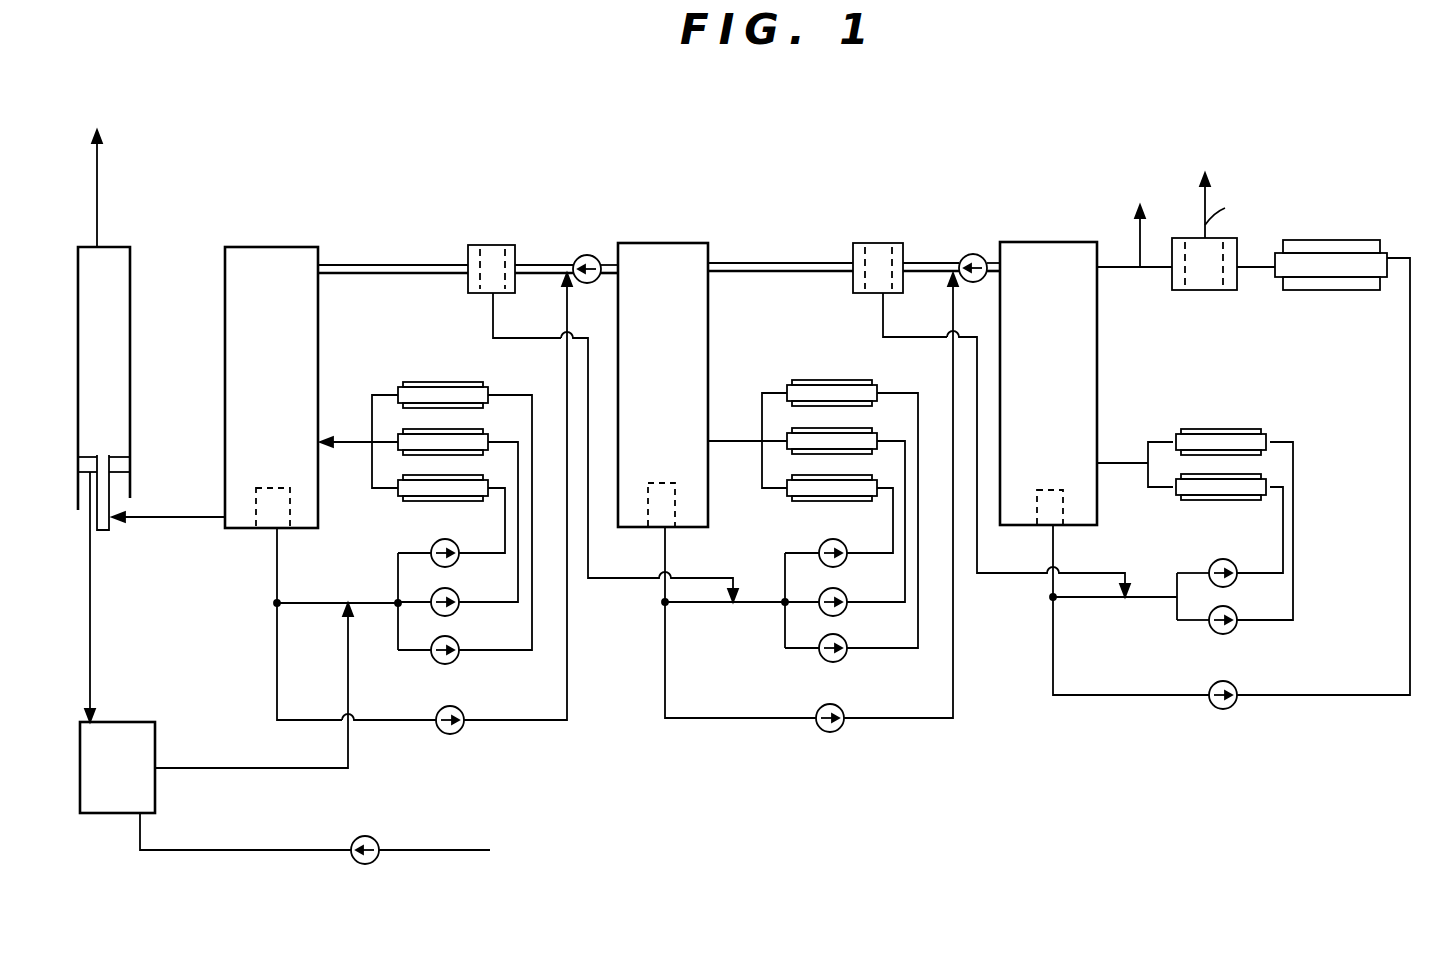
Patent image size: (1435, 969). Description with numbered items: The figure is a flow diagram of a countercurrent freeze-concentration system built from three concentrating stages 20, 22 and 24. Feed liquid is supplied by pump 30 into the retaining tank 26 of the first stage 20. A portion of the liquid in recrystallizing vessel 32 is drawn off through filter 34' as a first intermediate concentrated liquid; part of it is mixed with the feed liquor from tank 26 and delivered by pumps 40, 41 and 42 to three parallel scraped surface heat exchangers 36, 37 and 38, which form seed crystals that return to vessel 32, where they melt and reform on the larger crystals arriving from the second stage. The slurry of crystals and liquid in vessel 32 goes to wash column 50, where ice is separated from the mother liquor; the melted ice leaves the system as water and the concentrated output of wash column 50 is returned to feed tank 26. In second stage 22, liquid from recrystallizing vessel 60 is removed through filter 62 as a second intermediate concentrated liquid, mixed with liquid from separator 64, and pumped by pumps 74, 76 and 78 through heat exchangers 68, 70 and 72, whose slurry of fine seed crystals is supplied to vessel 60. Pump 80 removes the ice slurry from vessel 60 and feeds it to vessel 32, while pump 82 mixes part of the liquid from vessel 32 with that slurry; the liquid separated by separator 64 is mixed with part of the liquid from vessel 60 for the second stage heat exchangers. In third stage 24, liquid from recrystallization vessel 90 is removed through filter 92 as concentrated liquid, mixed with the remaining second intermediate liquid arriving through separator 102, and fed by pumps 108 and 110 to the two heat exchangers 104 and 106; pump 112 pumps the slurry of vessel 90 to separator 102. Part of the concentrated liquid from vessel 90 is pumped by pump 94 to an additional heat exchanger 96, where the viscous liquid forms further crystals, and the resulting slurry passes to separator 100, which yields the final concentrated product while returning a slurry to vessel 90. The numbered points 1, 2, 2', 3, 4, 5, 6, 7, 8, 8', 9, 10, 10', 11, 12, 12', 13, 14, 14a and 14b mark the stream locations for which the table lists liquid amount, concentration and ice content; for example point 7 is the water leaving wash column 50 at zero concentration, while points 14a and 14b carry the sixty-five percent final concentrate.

The first concentrating stage 20 is at (458, 202).
The second concentrating stage 22 is at (878, 180).
The third concentrating stage 24 is at (1215, 150).
The retaining tank 26 is at (150, 722).
The feed pump 30 is at (372, 838).
The recrystallizing vessel 32 is at (225, 327).
The filter 34' is at (247, 525).
The scraped surface heat exchanger 36 is at (465, 385).
The scraped surface heat exchanger 37 is at (467, 433).
The scraped surface heat exchanger 38 is at (467, 478).
The pump 40 is at (455, 640).
The pump 41 is at (455, 592).
The pump 42 is at (455, 545).
The wash column 50 is at (78, 323).
The recrystallizing vessel 60 is at (708, 350).
The filter 62 is at (675, 500).
The separator 64 is at (503, 258).
The scraped surface heat exchanger 68 is at (842, 383).
The scraped surface heat exchanger 70 is at (862, 432).
The scraped surface heat exchanger 72 is at (852, 478).
The pump 74 is at (850, 640).
The pump 76 is at (845, 593).
The pump 78 is at (843, 543).
The pump 80 is at (597, 257).
The pump 82 is at (460, 733).
The recrystallization vessel 90 is at (1090, 400).
The filter 92 is at (1062, 490).
The pump 94 is at (1232, 685).
The additional scraped surface heat exchanger 96 is at (1348, 252).
The separator 100 is at (1228, 252).
The separator 102 is at (885, 255).
The scraped surface heat exchanger 104 is at (1242, 428).
The scraped surface heat exchanger 106 is at (1240, 492).
The pump 108 is at (1230, 610).
The pump 110 is at (1255, 552).
The pump 112 is at (990, 283).
The system point 1 is at (308, 624).
The system point 2 is at (457, 496).
The system point 2' is at (615, 447).
The system point 3 is at (254, 685).
The system point 4 is at (359, 455).
The system point 5 is at (168, 504).
The system point 6 is at (100, 597).
The system point 7 is at (83, 174).
The system point 8 is at (566, 253).
The system point 8' is at (393, 256).
The system point 9 is at (739, 622).
The system point 10 is at (887, 520).
The system point 10' is at (1006, 445).
The system point 11 is at (747, 456).
The system point 12 is at (951, 252).
The system point 12' is at (780, 252).
The system point 13 is at (1131, 610).
The system point 14 is at (1122, 479).
The system point 14a is at (1259, 283).
The system point 14b is at (1134, 252).